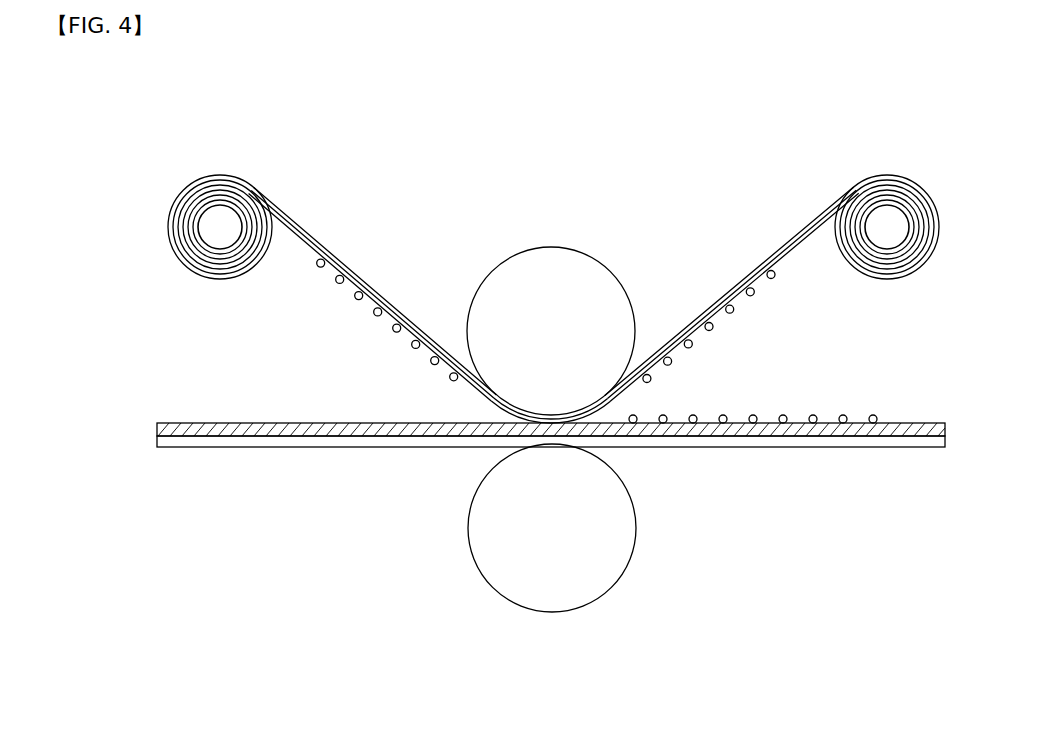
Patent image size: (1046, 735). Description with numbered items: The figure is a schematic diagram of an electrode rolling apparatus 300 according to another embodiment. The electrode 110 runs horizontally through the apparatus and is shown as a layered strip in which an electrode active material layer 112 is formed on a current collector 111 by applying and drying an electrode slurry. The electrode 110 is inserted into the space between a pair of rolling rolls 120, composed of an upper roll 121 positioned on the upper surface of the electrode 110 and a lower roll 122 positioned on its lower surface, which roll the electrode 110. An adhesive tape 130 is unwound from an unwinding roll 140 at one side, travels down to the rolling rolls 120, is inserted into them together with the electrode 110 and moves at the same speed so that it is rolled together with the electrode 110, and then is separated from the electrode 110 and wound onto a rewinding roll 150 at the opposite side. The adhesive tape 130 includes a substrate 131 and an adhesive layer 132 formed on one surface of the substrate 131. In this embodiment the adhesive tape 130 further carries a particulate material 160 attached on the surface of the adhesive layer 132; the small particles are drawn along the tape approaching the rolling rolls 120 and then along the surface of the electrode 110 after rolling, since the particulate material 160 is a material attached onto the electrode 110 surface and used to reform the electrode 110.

The electrode rolling apparatus 300 is at (170, 121).
The electrode 110 is at (551, 506).
The current collector 111 is at (773, 440).
The electrode active material layer 112 is at (853, 433).
The rolling rolls 120 is at (576, 418).
The upper roll 121 is at (629, 296).
The lower roll 122 is at (617, 580).
The adhesive tape 130 is at (684, 305).
The substrate 131 is at (825, 365).
The adhesive layer 132 is at (785, 268).
The unwinding roll 140 is at (220, 231).
The rewinding roll 150 is at (887, 229).
The particulate material 160 is at (358, 292).